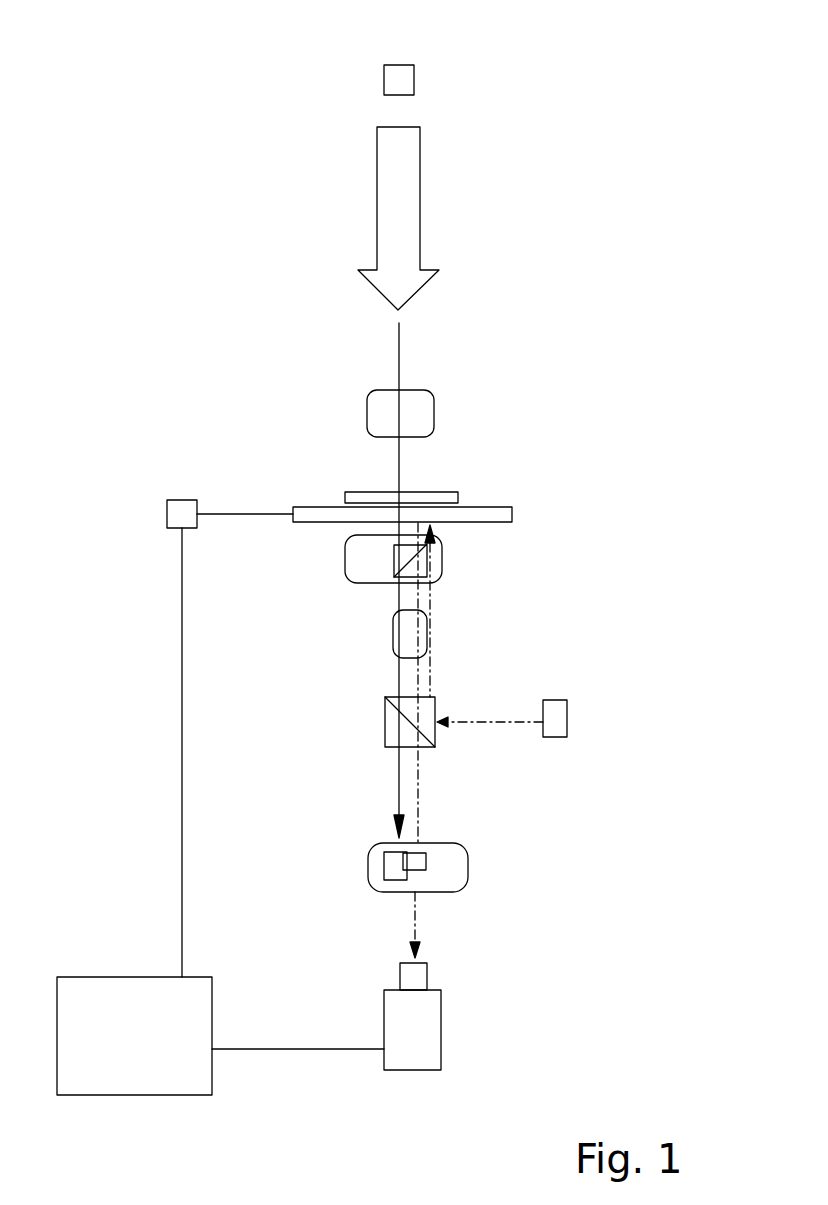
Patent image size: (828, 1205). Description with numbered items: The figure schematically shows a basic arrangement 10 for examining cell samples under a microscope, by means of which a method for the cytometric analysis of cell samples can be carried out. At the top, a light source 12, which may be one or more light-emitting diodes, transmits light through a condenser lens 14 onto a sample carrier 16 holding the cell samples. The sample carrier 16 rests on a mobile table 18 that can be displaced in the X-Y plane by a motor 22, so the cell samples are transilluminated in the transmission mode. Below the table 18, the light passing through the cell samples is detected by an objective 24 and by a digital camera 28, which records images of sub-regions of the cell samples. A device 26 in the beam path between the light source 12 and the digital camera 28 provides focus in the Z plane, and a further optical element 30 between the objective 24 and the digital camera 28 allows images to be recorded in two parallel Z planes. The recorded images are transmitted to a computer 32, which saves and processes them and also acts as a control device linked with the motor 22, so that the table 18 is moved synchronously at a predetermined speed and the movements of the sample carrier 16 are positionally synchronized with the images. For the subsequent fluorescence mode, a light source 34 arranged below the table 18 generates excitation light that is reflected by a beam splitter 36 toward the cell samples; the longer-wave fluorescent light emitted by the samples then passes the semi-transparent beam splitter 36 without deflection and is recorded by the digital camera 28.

The arrangement 10 is at (120, 446).
The light source 12 is at (398, 82).
The condenser lens 14 is at (417, 411).
The sample carrier 16 is at (450, 495).
The mobile table 18 is at (512, 514).
The motor 22 is at (183, 512).
The objective 24 is at (425, 634).
The device 26 is at (442, 565).
The digital camera 28 is at (428, 1037).
The further optical element 30 is at (450, 873).
The computer 32 is at (120, 1056).
The light source 34 is at (553, 718).
The beam splitter 36 is at (403, 724).